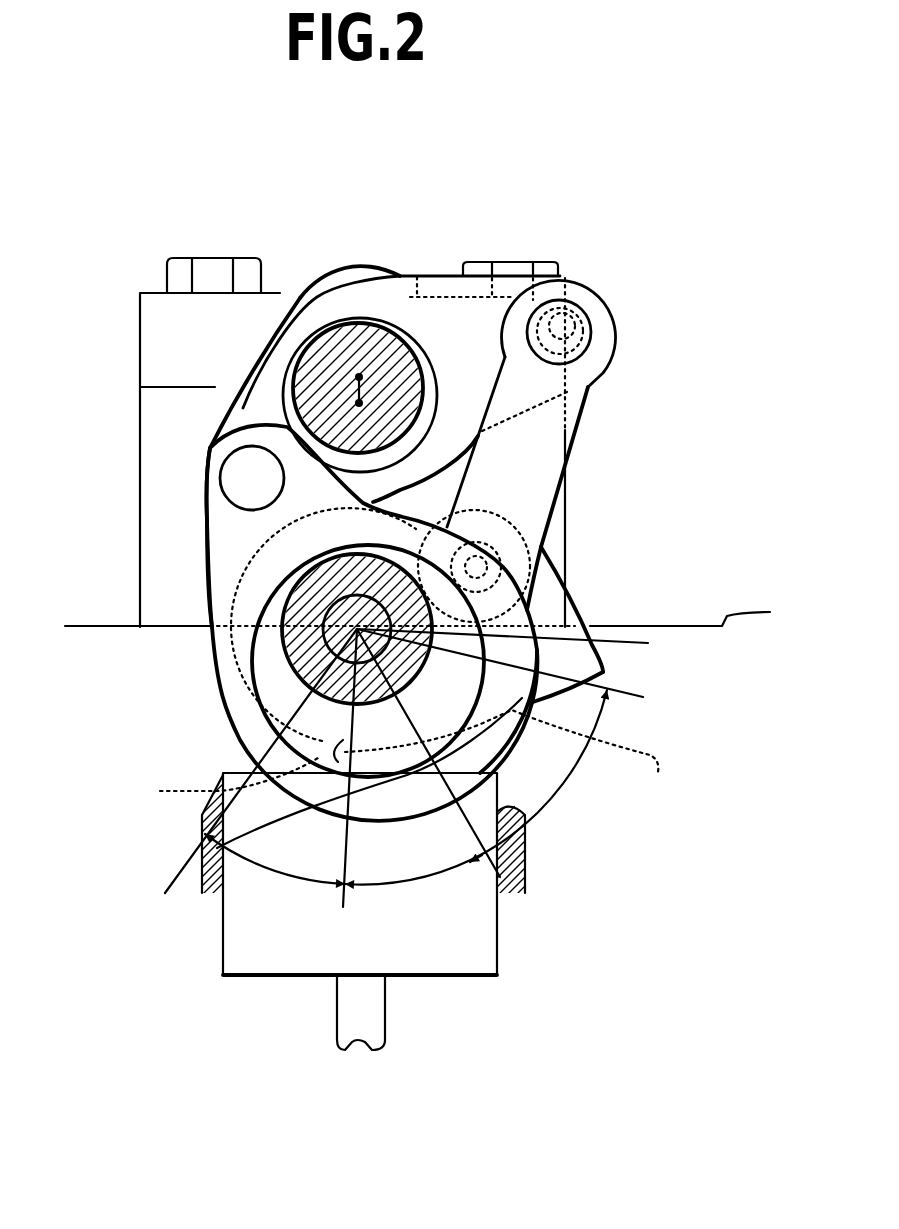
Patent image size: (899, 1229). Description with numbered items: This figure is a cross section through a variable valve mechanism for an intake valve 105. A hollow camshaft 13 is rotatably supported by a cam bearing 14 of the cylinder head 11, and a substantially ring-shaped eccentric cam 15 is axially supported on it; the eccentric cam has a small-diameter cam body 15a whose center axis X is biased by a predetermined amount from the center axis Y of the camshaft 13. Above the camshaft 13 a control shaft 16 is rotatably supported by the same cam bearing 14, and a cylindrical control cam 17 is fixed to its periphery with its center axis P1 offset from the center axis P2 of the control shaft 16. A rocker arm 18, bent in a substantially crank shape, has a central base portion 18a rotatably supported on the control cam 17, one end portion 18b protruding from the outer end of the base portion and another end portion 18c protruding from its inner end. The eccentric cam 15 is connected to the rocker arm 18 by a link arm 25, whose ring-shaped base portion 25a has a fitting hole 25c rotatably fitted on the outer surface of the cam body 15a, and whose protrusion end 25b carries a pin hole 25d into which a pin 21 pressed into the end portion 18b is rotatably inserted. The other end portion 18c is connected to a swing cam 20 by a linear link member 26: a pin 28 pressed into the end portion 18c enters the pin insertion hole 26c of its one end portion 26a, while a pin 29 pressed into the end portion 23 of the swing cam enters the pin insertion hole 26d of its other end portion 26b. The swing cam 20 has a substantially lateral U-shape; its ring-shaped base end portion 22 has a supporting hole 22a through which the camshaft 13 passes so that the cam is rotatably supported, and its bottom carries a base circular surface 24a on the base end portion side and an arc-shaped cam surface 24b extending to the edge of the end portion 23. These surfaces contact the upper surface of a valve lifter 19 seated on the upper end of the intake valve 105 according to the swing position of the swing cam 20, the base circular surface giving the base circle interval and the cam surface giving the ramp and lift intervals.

The cylinder head 11 is at (438, 605).
The camshaft 13 is at (325, 645).
The cam bearing 14 is at (136, 407).
The eccentric cam 15 is at (473, 733).
The cam body 15a is at (390, 760).
The control shaft 16 is at (385, 340).
The control cam 17 is at (433, 434).
The rocker arm 18 is at (343, 284).
The base portion 18a is at (362, 287).
The one end portion 18b is at (245, 410).
The other end portion 18c is at (518, 282).
The valve lifter 19 is at (440, 962).
The swing cam 20 is at (612, 672).
The pin 21 is at (222, 457).
The base end portion 22 is at (247, 600).
The supporting hole 22a is at (600, 705).
The end portion 23 is at (558, 590).
The base circular surface 24a is at (200, 818).
The cam surface 24b is at (563, 830).
The link arm 25 is at (207, 678).
The base portion 25a is at (232, 717).
The protrusion end 25b is at (220, 540).
The fitting hole 25c is at (552, 795).
The pin hole 25d is at (207, 500).
The link member 26 is at (530, 460).
The one end portion 26a is at (613, 318).
The other end portion 26b is at (527, 577).
The pin insertion hole 26c is at (593, 287).
The pin insertion hole 26d is at (570, 553).
The pin 28 is at (575, 340).
The pin 29 is at (545, 520).
The intake valve 105 is at (345, 1018).
The center axis of control cam P1 is at (359, 403).
The center axis of control shaft P2 is at (359, 377).
The center axis of cam body X is at (515, 644).
The center axis of camshaft Y is at (285, 588).